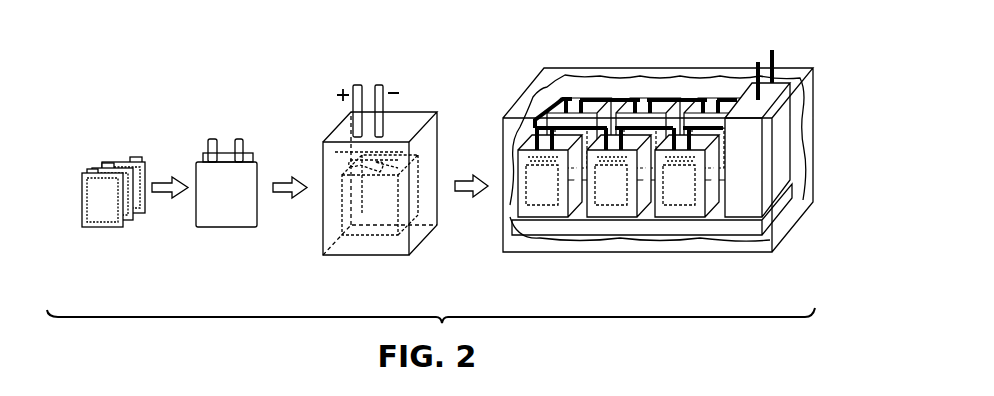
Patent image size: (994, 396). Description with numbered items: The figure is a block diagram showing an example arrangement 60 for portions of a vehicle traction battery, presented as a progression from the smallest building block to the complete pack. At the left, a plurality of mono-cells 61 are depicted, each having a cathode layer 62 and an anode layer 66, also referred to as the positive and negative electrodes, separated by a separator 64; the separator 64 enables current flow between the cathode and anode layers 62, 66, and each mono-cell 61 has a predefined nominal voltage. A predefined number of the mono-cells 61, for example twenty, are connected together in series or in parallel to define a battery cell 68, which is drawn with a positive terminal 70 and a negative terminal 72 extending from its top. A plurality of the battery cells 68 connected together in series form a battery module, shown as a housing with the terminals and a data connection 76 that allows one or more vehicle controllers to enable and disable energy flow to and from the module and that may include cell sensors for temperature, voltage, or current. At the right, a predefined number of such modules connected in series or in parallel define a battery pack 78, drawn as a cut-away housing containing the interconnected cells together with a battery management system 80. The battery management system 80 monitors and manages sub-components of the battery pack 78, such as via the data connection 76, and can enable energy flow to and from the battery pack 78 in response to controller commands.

The arrangement 60 is at (145, 92).
The mono-cell 61 is at (84, 156).
The cathode layer 62 is at (102, 227).
The separator 64 is at (133, 176).
The anode layer 66 is at (136, 156).
The battery cell 68 is at (226, 230).
The positive terminal 70 is at (212, 139).
The negative terminal 72 is at (240, 139).
The data connection 76 is at (340, 127).
The battery pack 78 is at (622, 58).
The battery management system 80 is at (745, 92).